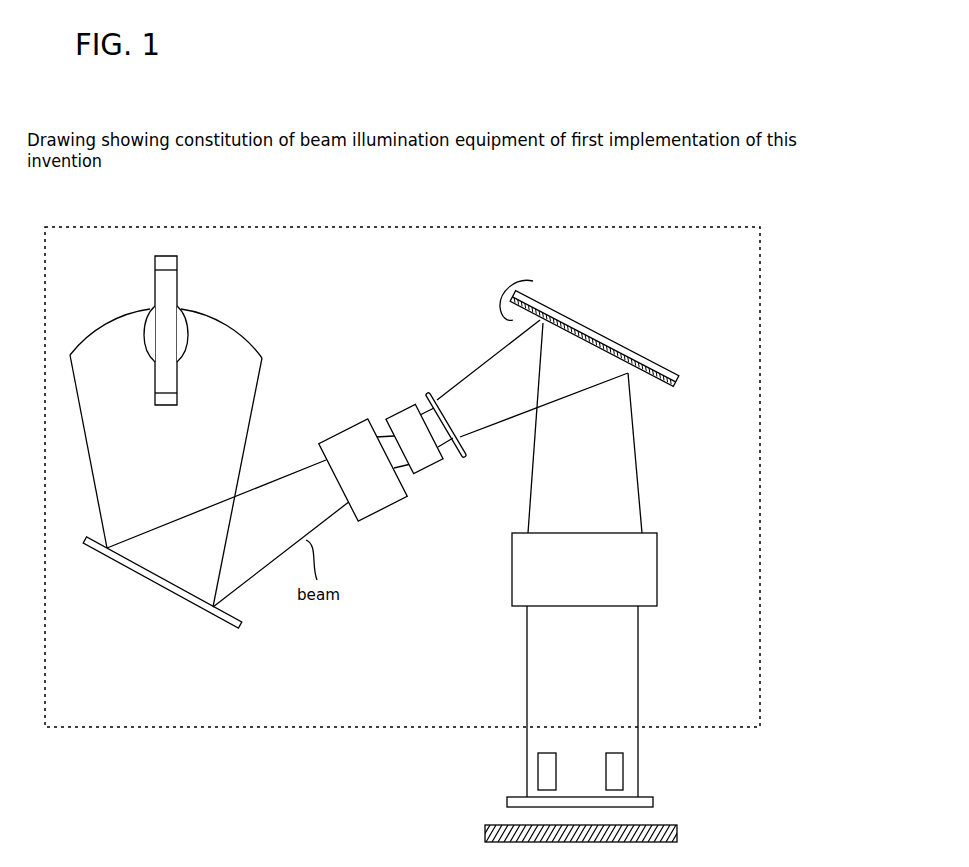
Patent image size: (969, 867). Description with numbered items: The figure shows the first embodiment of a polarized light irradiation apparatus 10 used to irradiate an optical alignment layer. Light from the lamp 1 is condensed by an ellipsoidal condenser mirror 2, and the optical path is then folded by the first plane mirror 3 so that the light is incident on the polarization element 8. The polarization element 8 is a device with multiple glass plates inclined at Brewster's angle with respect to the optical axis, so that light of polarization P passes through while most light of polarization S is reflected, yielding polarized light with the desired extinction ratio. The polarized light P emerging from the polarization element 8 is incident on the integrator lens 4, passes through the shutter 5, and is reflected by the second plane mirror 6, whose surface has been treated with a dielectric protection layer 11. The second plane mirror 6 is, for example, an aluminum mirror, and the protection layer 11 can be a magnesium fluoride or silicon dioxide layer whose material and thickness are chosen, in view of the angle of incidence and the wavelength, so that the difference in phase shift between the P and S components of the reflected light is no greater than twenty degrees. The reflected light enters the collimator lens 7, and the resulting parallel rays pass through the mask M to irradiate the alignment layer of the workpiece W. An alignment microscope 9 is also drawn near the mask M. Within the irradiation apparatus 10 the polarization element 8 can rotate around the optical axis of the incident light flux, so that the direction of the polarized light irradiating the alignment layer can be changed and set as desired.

The lamp 1 is at (179, 289).
The ellipsoidal condenser mirror 2 is at (243, 338).
The first plane mirror 3 is at (197, 608).
The integrator lens 4 is at (397, 407).
The shutter 5 is at (430, 393).
The second plane mirror 6 is at (650, 360).
The collimator lens 7 is at (659, 548).
The polarization element 8 is at (390, 508).
The Alignment microscope 9 is at (625, 769).
The irradiation apparatus 10 is at (120, 729).
The protection layer 11 is at (540, 288).
The mask M is at (653, 803).
The workpiece W is at (677, 834).